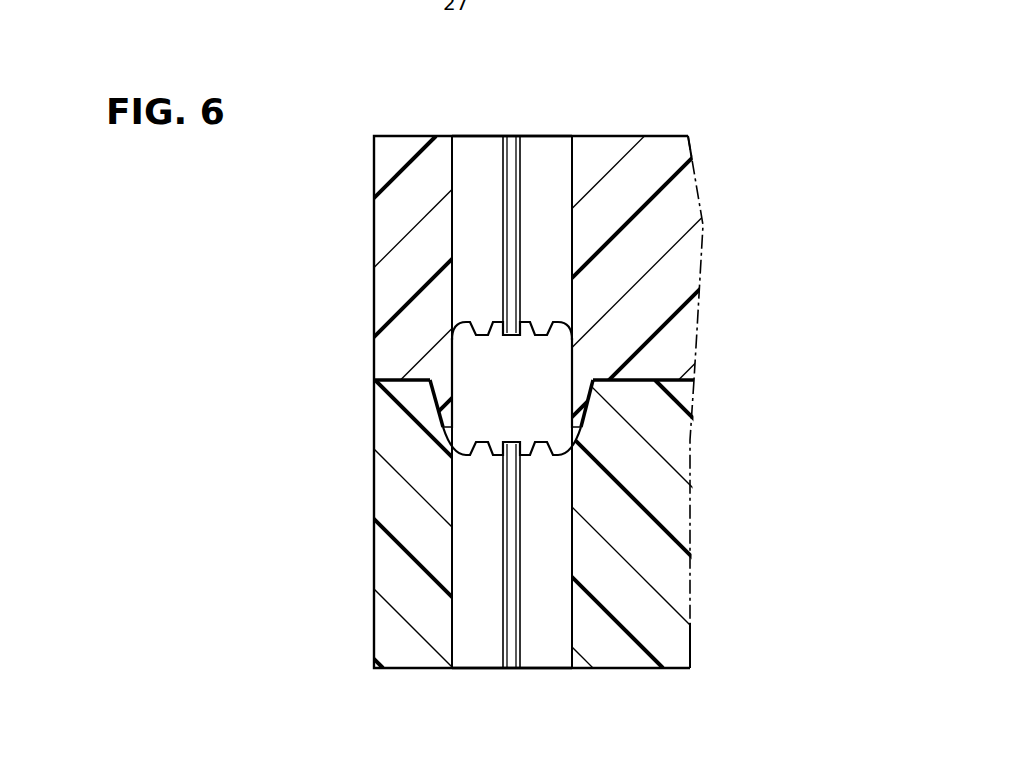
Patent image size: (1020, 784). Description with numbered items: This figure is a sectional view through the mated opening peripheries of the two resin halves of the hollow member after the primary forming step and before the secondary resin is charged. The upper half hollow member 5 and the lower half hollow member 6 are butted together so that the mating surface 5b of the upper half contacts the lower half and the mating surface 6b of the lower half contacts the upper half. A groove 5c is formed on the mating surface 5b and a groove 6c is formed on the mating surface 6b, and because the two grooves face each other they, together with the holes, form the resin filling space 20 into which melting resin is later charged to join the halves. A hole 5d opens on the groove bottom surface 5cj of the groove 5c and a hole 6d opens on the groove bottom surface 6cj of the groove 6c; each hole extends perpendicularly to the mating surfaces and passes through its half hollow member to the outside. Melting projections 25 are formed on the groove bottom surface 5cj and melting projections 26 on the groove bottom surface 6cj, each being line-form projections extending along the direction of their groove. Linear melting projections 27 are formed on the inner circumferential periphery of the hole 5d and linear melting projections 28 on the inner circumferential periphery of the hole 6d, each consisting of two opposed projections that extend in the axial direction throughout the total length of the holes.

The half hollow member 5 is at (374, 197).
The half hollow member 6 is at (395, 548).
The resin filling space 20 is at (482, 280).
The melting projection 25 is at (537, 321).
The melting projection 26 is at (535, 457).
The melting projection 27 is at (513, 165).
The melting projection 28 is at (515, 645).
The mating surface 5b is at (597, 384).
The groove 5c is at (552, 358).
The groove bottom surface 5cj is at (565, 320).
The hole 5d is at (548, 218).
The mating surface 6b is at (650, 379).
The groove 6c is at (540, 420).
The groove bottom surface 6cj is at (568, 462).
The hole 6d is at (557, 530).